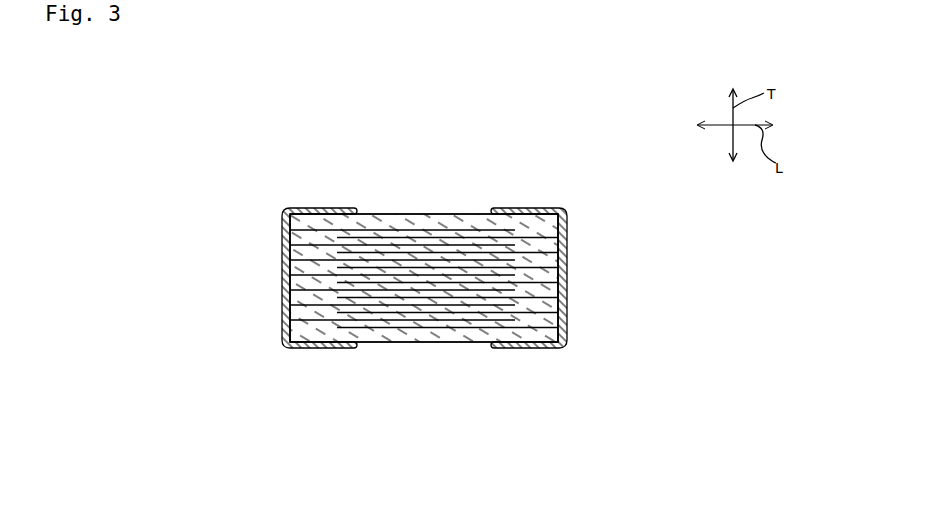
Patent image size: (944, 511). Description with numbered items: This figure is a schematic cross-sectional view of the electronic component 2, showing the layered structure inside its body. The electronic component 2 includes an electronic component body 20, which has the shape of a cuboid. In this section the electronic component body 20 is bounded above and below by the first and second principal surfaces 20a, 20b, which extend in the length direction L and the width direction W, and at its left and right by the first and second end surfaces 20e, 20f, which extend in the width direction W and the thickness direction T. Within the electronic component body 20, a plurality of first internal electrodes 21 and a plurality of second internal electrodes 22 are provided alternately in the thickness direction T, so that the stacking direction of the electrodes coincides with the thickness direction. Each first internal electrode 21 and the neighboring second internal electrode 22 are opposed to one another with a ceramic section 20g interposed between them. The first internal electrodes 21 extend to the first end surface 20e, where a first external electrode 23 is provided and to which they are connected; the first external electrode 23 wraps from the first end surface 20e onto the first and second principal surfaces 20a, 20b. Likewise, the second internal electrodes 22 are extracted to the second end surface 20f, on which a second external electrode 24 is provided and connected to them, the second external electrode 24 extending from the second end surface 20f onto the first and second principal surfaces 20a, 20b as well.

The electronic component 2 is at (421, 273).
The electronic component body 20 is at (421, 290).
The first principal surface 20a is at (392, 213).
The second principal surface 20b is at (388, 343).
The first end surface 20e is at (289, 323).
The second end surface 20f is at (559, 298).
The ceramic section 20g is at (413, 320).
The first internal electrodes 21 is at (376, 322).
The second internal electrodes 22 is at (440, 328).
The first external electrode 23 is at (279, 283).
The second external electrode 24 is at (570, 269).